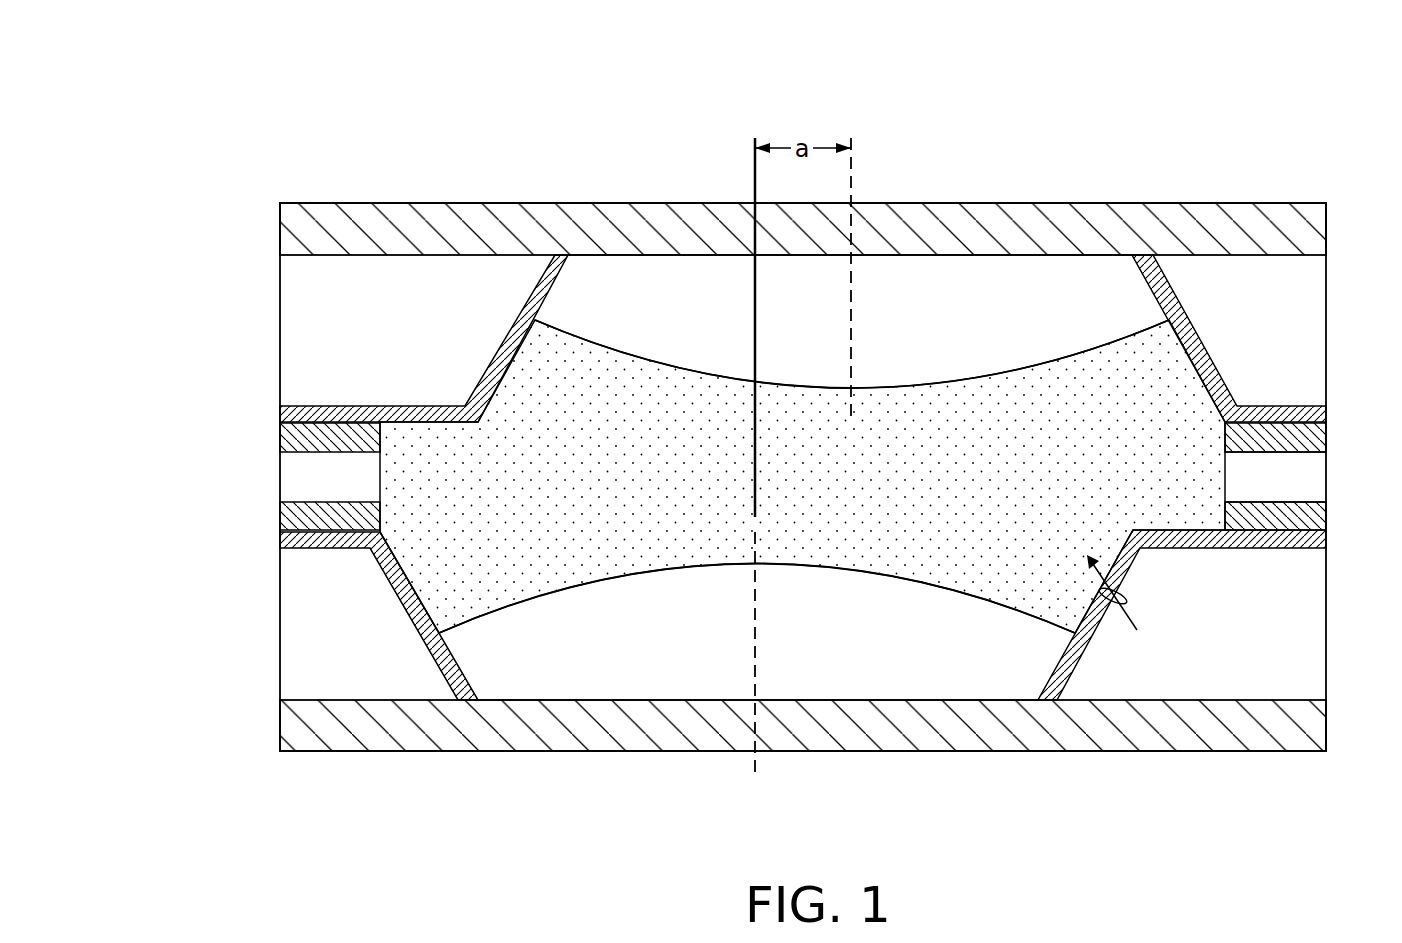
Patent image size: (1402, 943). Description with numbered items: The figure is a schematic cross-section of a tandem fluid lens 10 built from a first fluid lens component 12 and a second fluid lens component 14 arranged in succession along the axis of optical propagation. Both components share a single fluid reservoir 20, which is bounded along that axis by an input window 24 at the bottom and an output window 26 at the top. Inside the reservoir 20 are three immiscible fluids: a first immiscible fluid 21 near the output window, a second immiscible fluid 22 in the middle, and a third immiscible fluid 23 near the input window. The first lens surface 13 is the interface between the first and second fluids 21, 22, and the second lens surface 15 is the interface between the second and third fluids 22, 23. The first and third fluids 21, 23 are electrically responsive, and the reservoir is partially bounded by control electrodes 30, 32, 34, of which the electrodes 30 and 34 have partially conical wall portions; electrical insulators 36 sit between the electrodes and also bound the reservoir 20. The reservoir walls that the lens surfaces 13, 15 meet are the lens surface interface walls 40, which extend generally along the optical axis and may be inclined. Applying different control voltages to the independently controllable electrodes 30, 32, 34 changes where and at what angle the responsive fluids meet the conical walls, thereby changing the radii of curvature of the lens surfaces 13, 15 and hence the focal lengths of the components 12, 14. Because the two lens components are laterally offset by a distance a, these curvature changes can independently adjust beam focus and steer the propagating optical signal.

The fluid lens 10 is at (841, 394).
The first fluid lens component 12 is at (165, 352).
The first lens surface 13 is at (952, 383).
The second fluid lens component 14 is at (164, 602).
The second lens surface 15 is at (938, 588).
The fluid reservoir 20 is at (1126, 610).
The first immiscible fluid 21 is at (673, 317).
The second immiscible fluid 22 is at (675, 492).
The third immiscible fluid 23 is at (675, 647).
The input window 24 is at (1077, 743).
The output window 26 is at (1022, 212).
The control electrode 30 is at (1197, 342).
The control electrode 32 is at (1323, 475).
The control electrode 34 is at (1192, 543).
The electrical insulators 36 is at (1323, 435).
The lens surface interface walls 40 is at (505, 388).